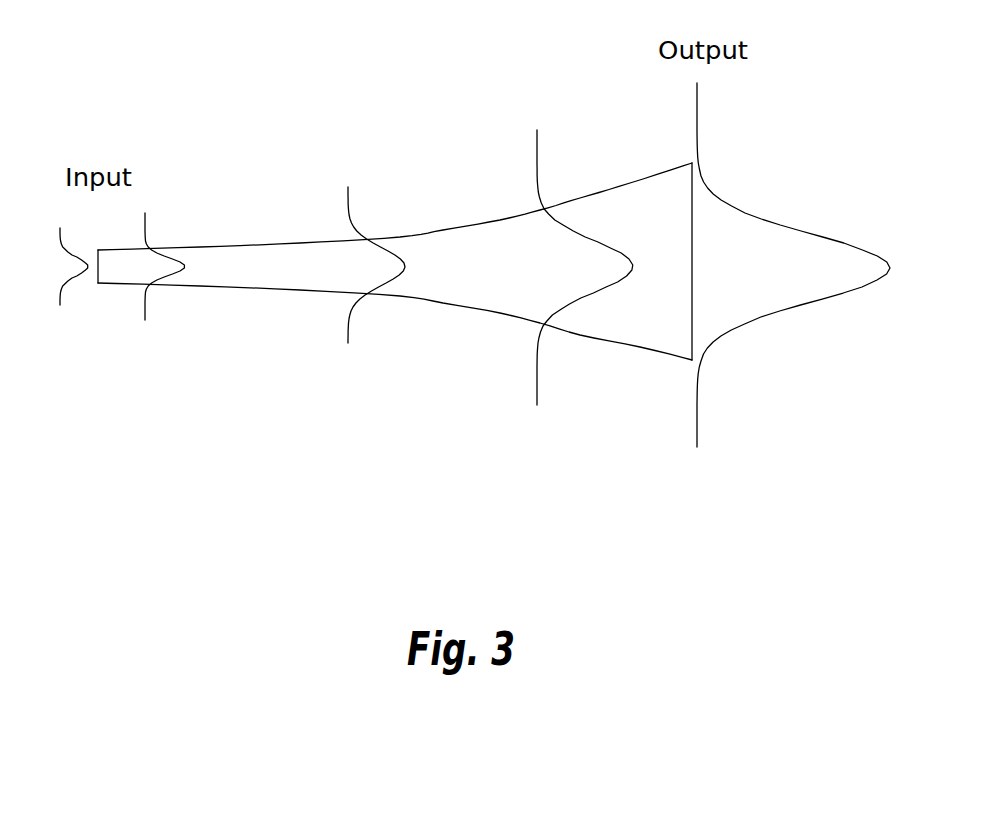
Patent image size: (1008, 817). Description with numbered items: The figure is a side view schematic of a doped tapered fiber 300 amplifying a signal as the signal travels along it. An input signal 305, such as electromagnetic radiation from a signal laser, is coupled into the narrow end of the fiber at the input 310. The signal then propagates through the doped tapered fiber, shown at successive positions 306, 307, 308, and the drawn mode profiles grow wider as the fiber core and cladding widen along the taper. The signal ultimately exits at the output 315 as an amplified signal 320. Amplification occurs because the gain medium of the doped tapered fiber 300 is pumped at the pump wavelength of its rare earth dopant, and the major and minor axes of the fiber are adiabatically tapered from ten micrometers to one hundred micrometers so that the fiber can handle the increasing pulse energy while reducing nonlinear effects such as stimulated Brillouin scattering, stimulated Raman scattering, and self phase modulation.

The doped tapered fiber 300 is at (395, 198).
The input signal 305 is at (76, 281).
The propagating signal at first position 306 is at (155, 282).
The propagating signal at second position 307 is at (367, 282).
The propagating signal at third position 308 is at (574, 284).
The input 310 is at (184, 202).
The output 315 is at (637, 223).
The amplified signal 320 is at (782, 282).